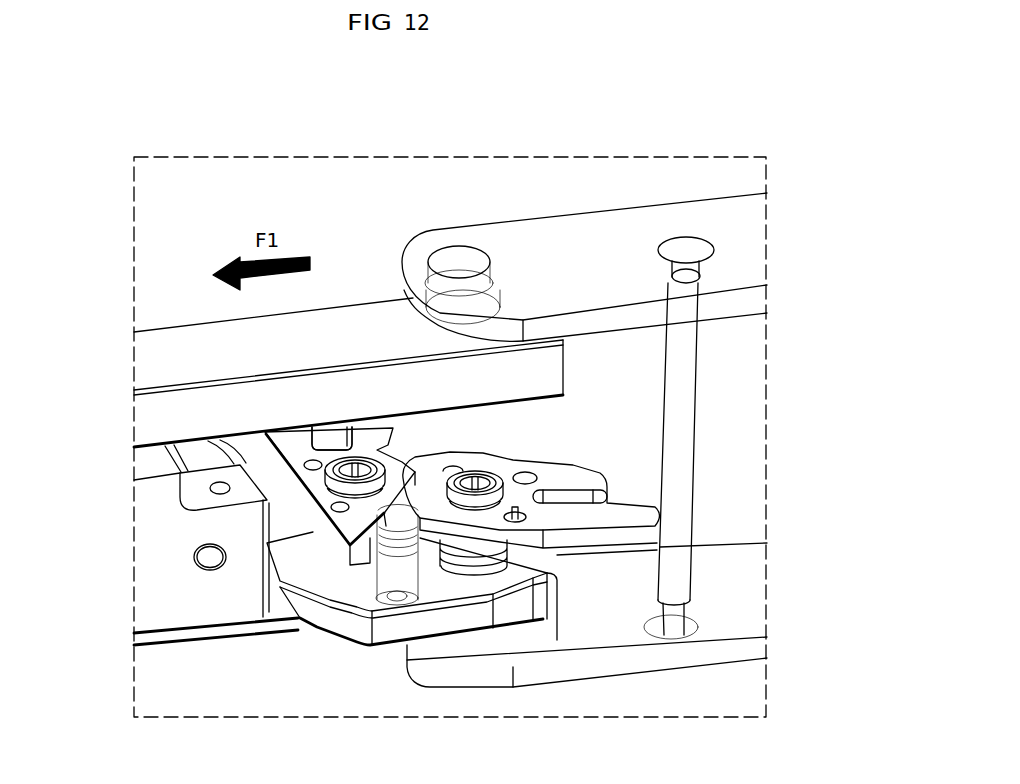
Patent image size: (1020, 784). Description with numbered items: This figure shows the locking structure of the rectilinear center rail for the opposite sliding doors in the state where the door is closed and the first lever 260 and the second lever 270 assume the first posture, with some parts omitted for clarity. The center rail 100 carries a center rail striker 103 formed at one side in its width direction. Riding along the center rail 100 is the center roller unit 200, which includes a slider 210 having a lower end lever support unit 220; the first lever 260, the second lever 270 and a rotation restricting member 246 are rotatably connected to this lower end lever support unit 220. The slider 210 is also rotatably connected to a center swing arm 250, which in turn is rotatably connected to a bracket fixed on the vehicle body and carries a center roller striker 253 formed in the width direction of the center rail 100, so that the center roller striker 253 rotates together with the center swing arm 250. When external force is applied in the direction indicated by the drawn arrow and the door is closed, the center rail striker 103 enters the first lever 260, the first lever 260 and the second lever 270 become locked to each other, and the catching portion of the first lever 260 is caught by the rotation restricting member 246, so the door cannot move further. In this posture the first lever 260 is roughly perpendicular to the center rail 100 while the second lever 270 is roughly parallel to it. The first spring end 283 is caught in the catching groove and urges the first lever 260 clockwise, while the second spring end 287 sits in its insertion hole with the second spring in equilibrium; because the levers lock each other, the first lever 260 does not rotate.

The center rail 100 is at (370, 317).
The center rail striker 103 is at (325, 435).
The center roller unit 200 is at (207, 645).
The slider 210 is at (155, 576).
The lower end lever support unit 220 is at (377, 627).
The rotation restricting member 246 is at (413, 580).
The center swing arm 250 is at (563, 243).
The center roller striker 253 is at (693, 355).
The first lever 260 is at (373, 422).
The second lever 270 is at (584, 444).
The first spring end 283 is at (318, 550).
The second spring end 287 is at (524, 522).